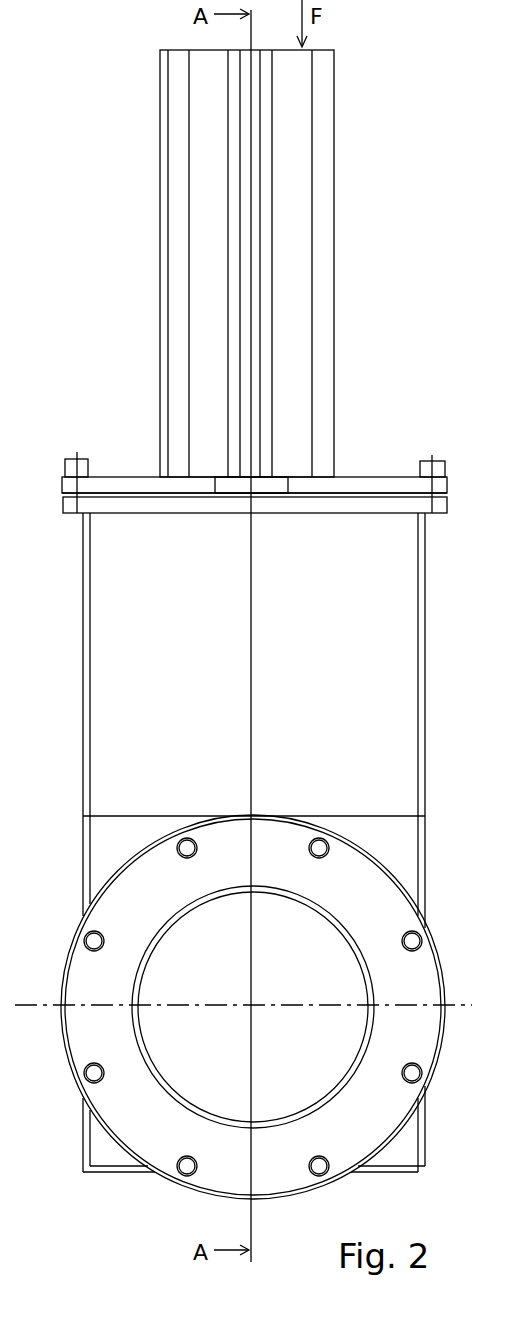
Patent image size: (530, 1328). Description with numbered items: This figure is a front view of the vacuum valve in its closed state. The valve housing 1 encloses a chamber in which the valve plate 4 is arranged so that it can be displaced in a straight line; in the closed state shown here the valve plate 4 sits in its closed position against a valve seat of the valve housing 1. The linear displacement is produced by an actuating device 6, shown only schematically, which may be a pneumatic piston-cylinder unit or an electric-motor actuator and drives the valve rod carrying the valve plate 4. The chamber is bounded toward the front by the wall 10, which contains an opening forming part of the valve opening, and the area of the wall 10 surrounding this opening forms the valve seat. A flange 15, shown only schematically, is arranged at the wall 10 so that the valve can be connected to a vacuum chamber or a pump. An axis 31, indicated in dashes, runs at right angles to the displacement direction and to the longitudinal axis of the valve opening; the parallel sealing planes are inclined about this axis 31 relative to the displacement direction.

The valve housing 1 is at (429, 656).
The valve plate 4 is at (176, 978).
The actuating device 6 is at (342, 287).
The wall 10 is at (352, 813).
The flange 15 is at (416, 980).
The axis 31 is at (45, 1006).